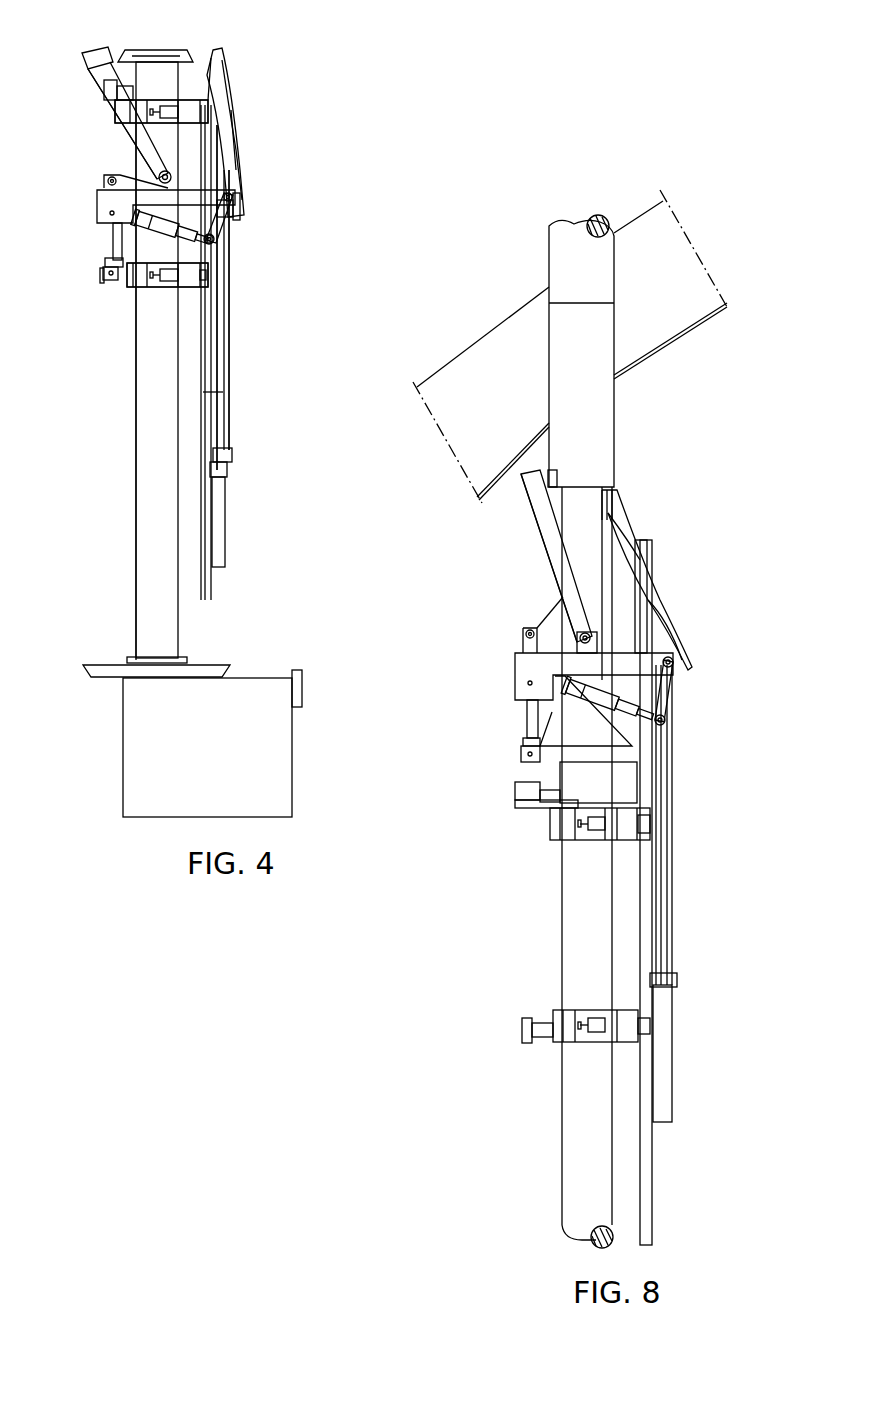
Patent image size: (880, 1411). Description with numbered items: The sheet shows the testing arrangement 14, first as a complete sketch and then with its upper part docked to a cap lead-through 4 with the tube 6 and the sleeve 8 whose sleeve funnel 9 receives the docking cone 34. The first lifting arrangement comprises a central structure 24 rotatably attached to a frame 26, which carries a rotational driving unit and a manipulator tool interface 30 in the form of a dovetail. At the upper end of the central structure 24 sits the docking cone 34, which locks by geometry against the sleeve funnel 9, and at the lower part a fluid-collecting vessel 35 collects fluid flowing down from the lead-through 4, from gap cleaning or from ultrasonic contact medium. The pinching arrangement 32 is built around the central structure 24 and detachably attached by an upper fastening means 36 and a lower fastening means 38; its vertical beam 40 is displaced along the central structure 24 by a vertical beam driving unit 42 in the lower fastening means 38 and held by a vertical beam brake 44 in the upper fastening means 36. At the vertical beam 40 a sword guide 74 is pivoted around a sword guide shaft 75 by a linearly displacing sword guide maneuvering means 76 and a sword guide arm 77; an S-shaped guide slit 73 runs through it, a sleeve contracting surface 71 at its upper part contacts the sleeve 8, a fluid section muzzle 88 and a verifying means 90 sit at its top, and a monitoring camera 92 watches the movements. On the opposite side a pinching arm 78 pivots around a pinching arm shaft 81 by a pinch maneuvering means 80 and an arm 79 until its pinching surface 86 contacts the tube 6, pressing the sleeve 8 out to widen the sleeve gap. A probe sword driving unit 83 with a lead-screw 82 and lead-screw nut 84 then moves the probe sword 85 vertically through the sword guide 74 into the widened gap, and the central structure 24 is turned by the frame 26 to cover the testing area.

In FIG. 8, the cap lead-through 4 is at (640, 372).
In FIG. 8, the tube 6 is at (612, 406).
In FIG. 8, the sleeve 8 is at (578, 525).
In FIG. 8, the sleeve funnel 9 is at (596, 762).
In FIG. 4, the testing arrangement 14 is at (100, 704).
In FIG. 8, the testing arrangement 14 is at (540, 915).
In FIG. 4, the central structure 24 is at (152, 451).
In FIG. 8, the central structure 24 is at (572, 886).
In FIG. 4, the frame 26 is at (242, 680).
In FIG. 4, the manipulator tool interface 30 is at (302, 693).
In FIG. 4, the pinching arrangement 32 is at (124, 200).
In FIG. 8, the pinching arrangement 32 is at (546, 660).
In FIG. 4, the docking cone 34 is at (132, 54).
In FIG. 4, the fluid-collecting vessel 35 is at (114, 665).
In FIG. 4, the upper fastening means 36 is at (176, 100).
In FIG. 4, the lower fastening means 38 is at (117, 286).
In FIG. 4, the vertical beam 40 is at (222, 392).
In FIG. 4, the vertical beam driving unit 42 is at (167, 275).
In FIG. 8, the vertical beam driving unit 42 is at (582, 1043).
In FIG. 4, the vertical beam brake 44 is at (201, 56).
In FIG. 8, the vertical beam brake 44 is at (566, 832).
In FIG. 8, the sleeve contracting surface 71 is at (608, 494).
In FIG. 4, the guide slit 73 is at (228, 150).
In FIG. 4, the sword guide 74 is at (242, 177).
In FIG. 8, the sword guide 74 is at (624, 527).
In FIG. 4, the sword guide shaft 75 is at (236, 200).
In FIG. 4, the sword guide maneuvering means 76 is at (138, 230).
In FIG. 8, the sword guide maneuvering means 76 is at (614, 714).
In FIG. 4, the sword guide arm 77 is at (218, 226).
In FIG. 4, the pinching arm 78 is at (90, 74).
In FIG. 8, the pinching arm 78 is at (554, 568).
In FIG. 4, the arm 79 is at (112, 165).
In FIG. 4, the pinch maneuvering means 80 is at (110, 236).
In FIG. 8, the pinch maneuvering means 80 is at (528, 720).
In FIG. 4, the pinching arm shaft 81 is at (137, 164).
In FIG. 4, the lead-screw 82 is at (220, 344).
In FIG. 4, the probe sword driving unit 83 is at (230, 544).
In FIG. 8, the probe sword driving unit 83 is at (670, 1048).
In FIG. 4, the lead-screw nut 84 is at (232, 458).
In FIG. 4, the probe sword 85 is at (228, 314).
In FIG. 8, the probe sword 85 is at (666, 890).
In FIG. 8, the pinching surface 86 is at (554, 476).
In FIG. 4, the fluid section muzzle 88 is at (224, 50).
In FIG. 4, the verifying means 90 is at (224, 86).
In FIG. 4, the monitoring camera 92 is at (232, 119).